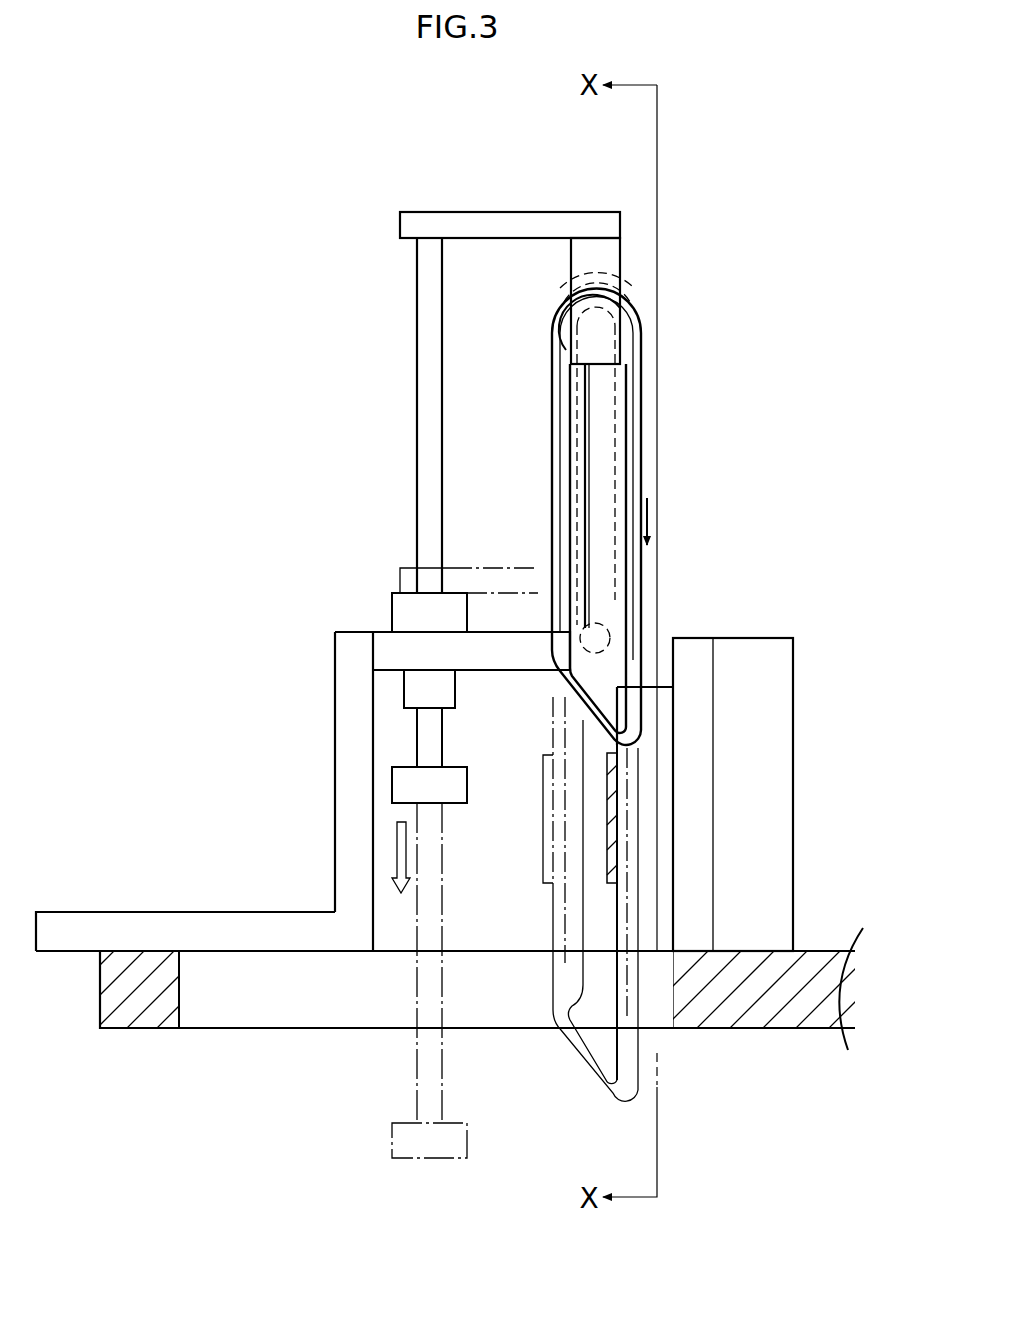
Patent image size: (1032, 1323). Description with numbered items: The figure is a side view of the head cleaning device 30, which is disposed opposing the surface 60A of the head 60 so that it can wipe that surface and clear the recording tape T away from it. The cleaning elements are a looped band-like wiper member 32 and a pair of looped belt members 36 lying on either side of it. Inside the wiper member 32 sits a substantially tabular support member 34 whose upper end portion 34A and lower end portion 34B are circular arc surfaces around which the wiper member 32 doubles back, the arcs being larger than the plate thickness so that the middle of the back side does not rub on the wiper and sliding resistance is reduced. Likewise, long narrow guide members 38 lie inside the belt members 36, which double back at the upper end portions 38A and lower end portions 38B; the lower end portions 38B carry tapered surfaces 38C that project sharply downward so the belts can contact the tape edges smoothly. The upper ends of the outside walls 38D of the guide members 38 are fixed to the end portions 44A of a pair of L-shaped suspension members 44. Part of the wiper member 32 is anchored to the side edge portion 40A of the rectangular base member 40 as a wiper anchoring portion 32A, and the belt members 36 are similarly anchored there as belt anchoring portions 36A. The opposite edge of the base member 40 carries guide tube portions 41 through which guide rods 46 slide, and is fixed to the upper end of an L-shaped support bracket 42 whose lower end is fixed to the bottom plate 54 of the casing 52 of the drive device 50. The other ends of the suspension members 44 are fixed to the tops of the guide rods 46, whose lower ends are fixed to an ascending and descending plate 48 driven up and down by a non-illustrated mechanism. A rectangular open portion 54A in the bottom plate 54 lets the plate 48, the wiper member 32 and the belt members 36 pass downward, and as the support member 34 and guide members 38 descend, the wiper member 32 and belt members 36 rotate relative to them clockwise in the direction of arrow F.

The head cleaning device 30 is at (479, 212).
The suspension members 44 is at (544, 220).
The end portions of suspension members 44A is at (600, 358).
The guide rods 46 is at (424, 325).
The guide tube portions 41 is at (410, 602).
The base member 40 is at (376, 631).
The side edge portion of base member 40A is at (572, 645).
The ascending and descending plate 48 is at (396, 788).
The support bracket 42 is at (298, 912).
The bottom plate 54 is at (815, 948).
The open portion 54A is at (183, 1015).
The casing 52 is at (103, 1033).
The head 60 is at (750, 638).
The surface of head 60A is at (612, 905).
The recording tape T is at (605, 855).
The drive device 50 is at (812, 770).
The belt members 36 is at (641, 347).
The belt anchoring portions 36A is at (570, 655).
The guide members 38 is at (628, 478).
The upper end portions of guide members 38A is at (566, 318).
The lower end portions of guide members 38B is at (562, 673).
The tapered surfaces 38C is at (590, 705).
The outside walls of guide members 38D is at (602, 408).
The wiper member 32 is at (637, 655).
The wiper anchoring portion 32A is at (570, 655).
The support member 34 is at (602, 452).
The upper end portion of support member 34A is at (634, 290).
The lower end portion of support member 34B is at (615, 648).
The arrow F is at (651, 512).